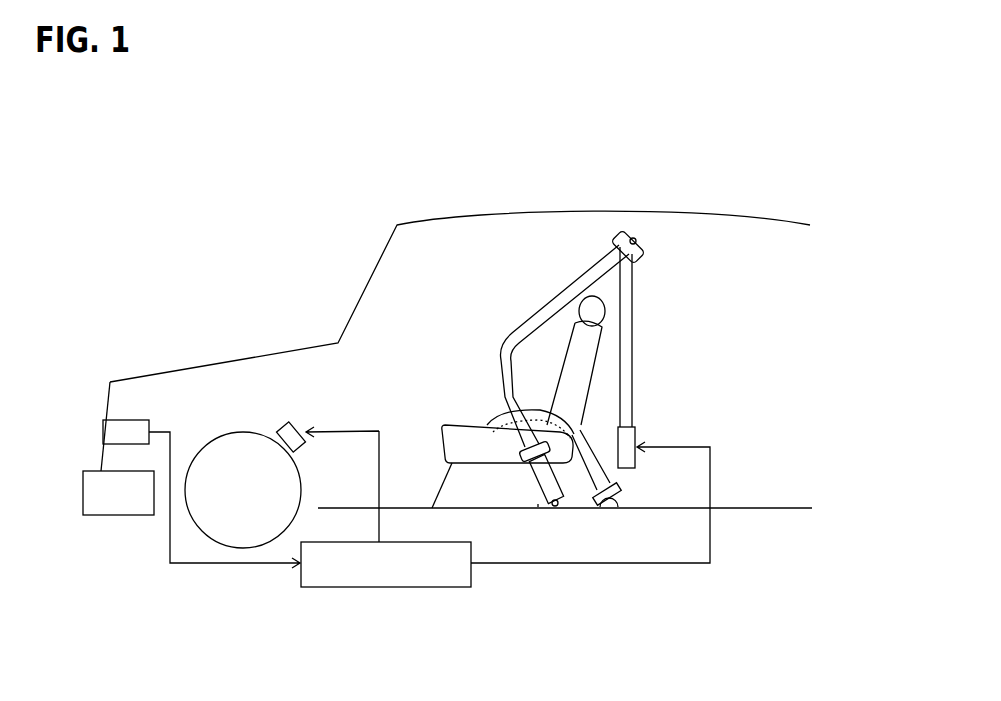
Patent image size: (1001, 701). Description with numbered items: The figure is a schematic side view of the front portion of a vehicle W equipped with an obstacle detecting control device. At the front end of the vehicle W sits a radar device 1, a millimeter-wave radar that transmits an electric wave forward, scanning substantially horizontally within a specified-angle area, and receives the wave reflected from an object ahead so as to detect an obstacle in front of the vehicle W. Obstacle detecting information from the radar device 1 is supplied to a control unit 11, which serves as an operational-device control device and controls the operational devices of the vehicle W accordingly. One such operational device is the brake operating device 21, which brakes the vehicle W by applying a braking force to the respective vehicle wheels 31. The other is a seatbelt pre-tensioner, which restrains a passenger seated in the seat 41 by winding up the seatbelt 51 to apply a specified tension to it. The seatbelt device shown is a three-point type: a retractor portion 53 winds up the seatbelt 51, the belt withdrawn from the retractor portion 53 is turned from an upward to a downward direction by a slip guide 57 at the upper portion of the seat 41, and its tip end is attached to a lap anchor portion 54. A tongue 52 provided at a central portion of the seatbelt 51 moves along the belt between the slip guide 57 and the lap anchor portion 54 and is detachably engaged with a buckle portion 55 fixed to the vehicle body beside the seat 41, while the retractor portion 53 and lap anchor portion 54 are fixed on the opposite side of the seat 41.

The vehicle W is at (505, 215).
The radar device 1 is at (103, 430).
The control unit 11 is at (363, 588).
The brake operating device 21 is at (283, 424).
The vehicle wheels 31 is at (236, 432).
The seat 41 is at (466, 425).
The seatbelt 51 is at (563, 290).
The tongue 52 is at (527, 468).
The retractor portion 53 is at (637, 432).
The lap anchor portion 54 is at (622, 498).
The buckle portion 55 is at (537, 493).
The slip guide 57 is at (642, 243).